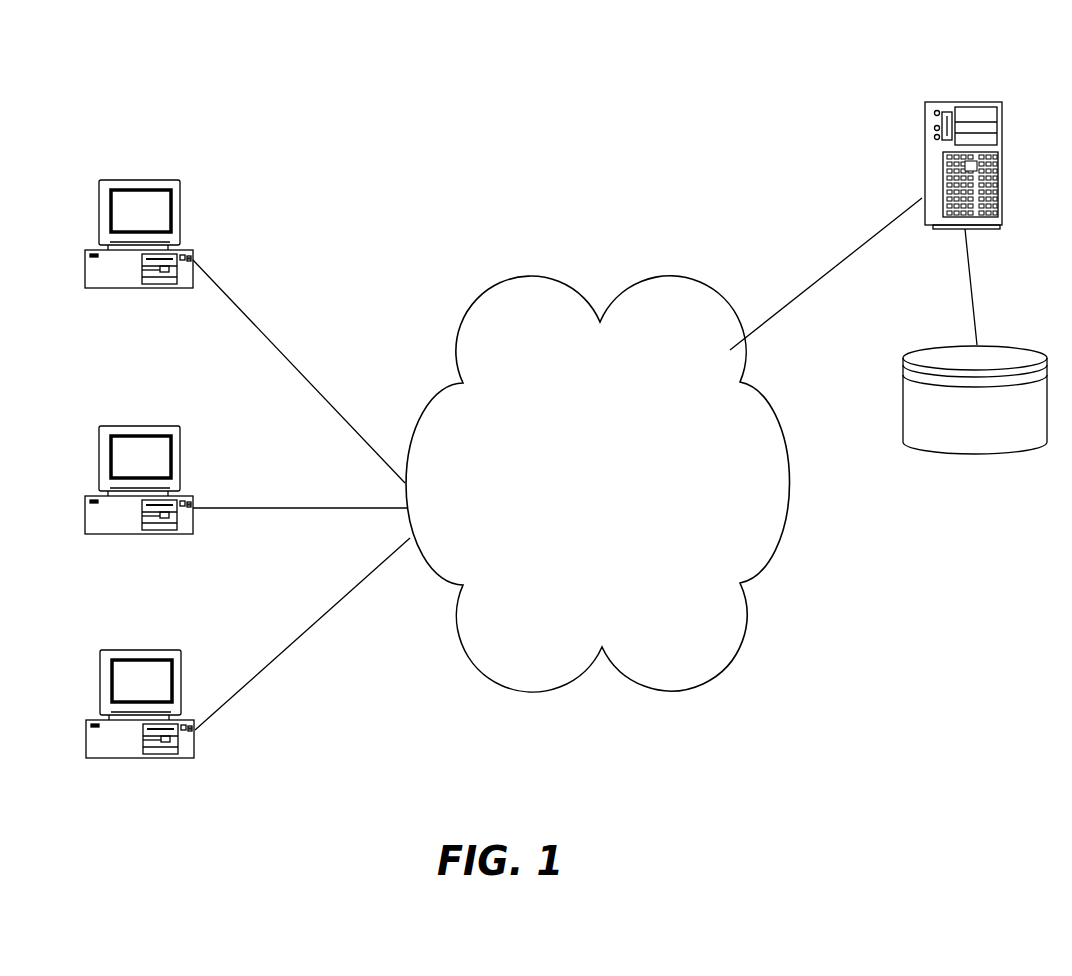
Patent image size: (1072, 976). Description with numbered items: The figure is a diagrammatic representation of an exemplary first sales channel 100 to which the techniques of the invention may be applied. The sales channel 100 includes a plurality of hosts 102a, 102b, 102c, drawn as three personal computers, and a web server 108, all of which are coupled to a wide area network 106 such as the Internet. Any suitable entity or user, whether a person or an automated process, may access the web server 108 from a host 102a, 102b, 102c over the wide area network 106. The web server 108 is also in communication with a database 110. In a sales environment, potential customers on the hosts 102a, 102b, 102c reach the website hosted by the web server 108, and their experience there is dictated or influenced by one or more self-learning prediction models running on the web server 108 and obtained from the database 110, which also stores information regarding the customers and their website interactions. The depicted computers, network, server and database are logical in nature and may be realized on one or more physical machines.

The sales channel 100 is at (386, 40).
The host 102a is at (120, 179).
The host 102b is at (121, 425).
The host 102c is at (120, 648).
The wide area network 106 is at (538, 278).
The web server 108 is at (922, 140).
The database 110 is at (970, 453).